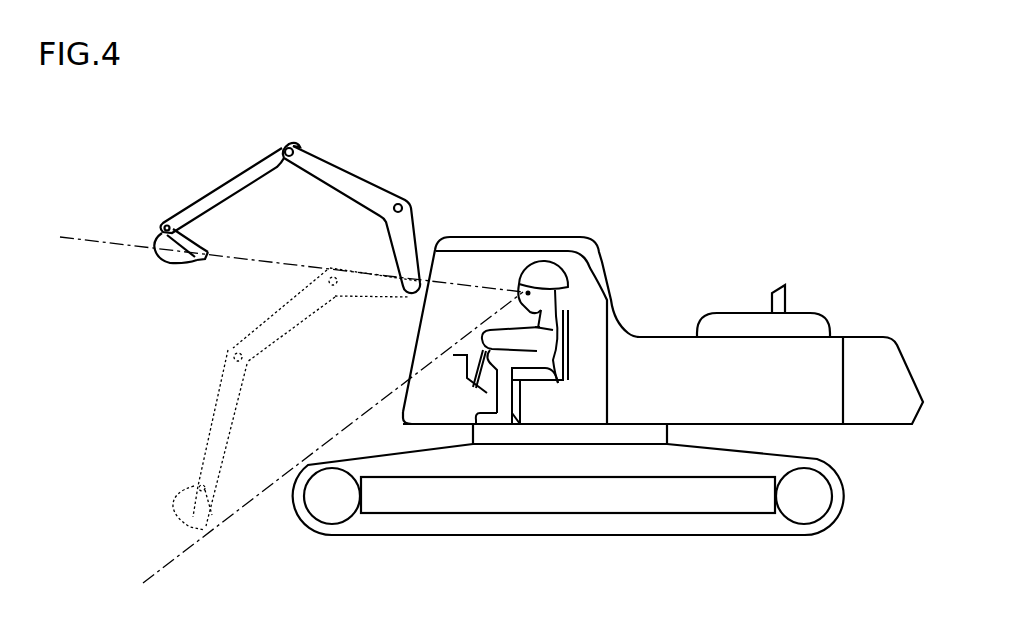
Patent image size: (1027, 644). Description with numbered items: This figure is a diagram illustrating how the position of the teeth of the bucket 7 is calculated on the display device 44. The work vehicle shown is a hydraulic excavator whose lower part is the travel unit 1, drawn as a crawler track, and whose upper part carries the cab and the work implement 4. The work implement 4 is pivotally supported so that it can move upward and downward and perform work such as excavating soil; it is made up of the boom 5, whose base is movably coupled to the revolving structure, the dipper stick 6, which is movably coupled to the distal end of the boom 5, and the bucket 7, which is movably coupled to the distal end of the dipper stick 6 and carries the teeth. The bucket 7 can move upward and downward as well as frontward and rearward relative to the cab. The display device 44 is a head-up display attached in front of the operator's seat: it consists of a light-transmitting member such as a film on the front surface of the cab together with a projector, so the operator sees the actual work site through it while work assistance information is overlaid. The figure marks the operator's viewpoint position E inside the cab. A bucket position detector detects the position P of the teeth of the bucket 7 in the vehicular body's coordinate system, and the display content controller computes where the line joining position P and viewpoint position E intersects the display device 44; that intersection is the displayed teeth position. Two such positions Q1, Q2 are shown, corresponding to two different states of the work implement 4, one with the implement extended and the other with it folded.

The travel unit 1 is at (627, 495).
The work implement 4 is at (337, 134).
The boom 5 is at (372, 182).
The dipper stick 6 is at (222, 187).
The bucket 7 is at (155, 257).
The display device 44 is at (427, 244).
The position of teeth of bucket P is at (208, 257).
The position of teeth of bucket on display device Q1 is at (424, 284).
The position of teeth of bucket on display device Q2 is at (410, 379).
The operator's viewpoint position E is at (510, 341).